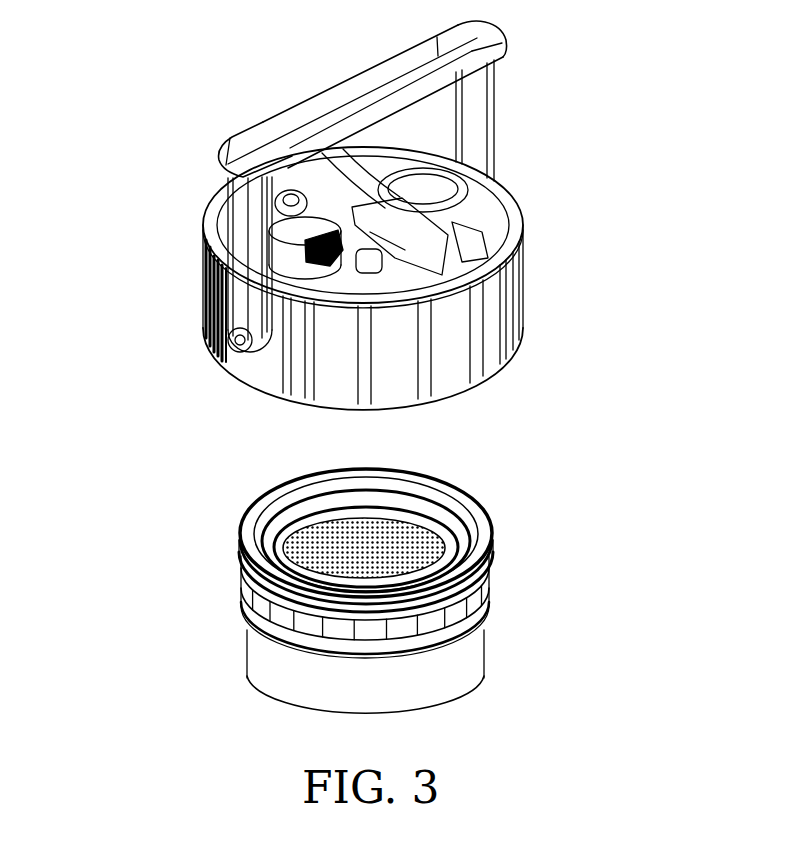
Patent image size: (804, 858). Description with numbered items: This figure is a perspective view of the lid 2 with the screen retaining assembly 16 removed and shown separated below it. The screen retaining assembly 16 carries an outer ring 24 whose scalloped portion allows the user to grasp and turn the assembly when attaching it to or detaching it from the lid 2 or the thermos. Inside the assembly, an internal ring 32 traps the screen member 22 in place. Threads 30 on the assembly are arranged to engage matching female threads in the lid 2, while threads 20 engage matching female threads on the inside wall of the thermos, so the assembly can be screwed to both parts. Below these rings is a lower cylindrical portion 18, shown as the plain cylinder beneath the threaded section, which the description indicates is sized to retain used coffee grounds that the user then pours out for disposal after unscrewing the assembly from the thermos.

The lid 2 is at (566, 352).
The screen retaining assembly 16 is at (547, 688).
The cylindrical container body 18 is at (294, 723).
The threads 20 is at (272, 644).
The screen member 22 is at (288, 523).
The outer ring 24 is at (290, 576).
The threads 30 is at (287, 536).
The internal ring 32 is at (293, 483).